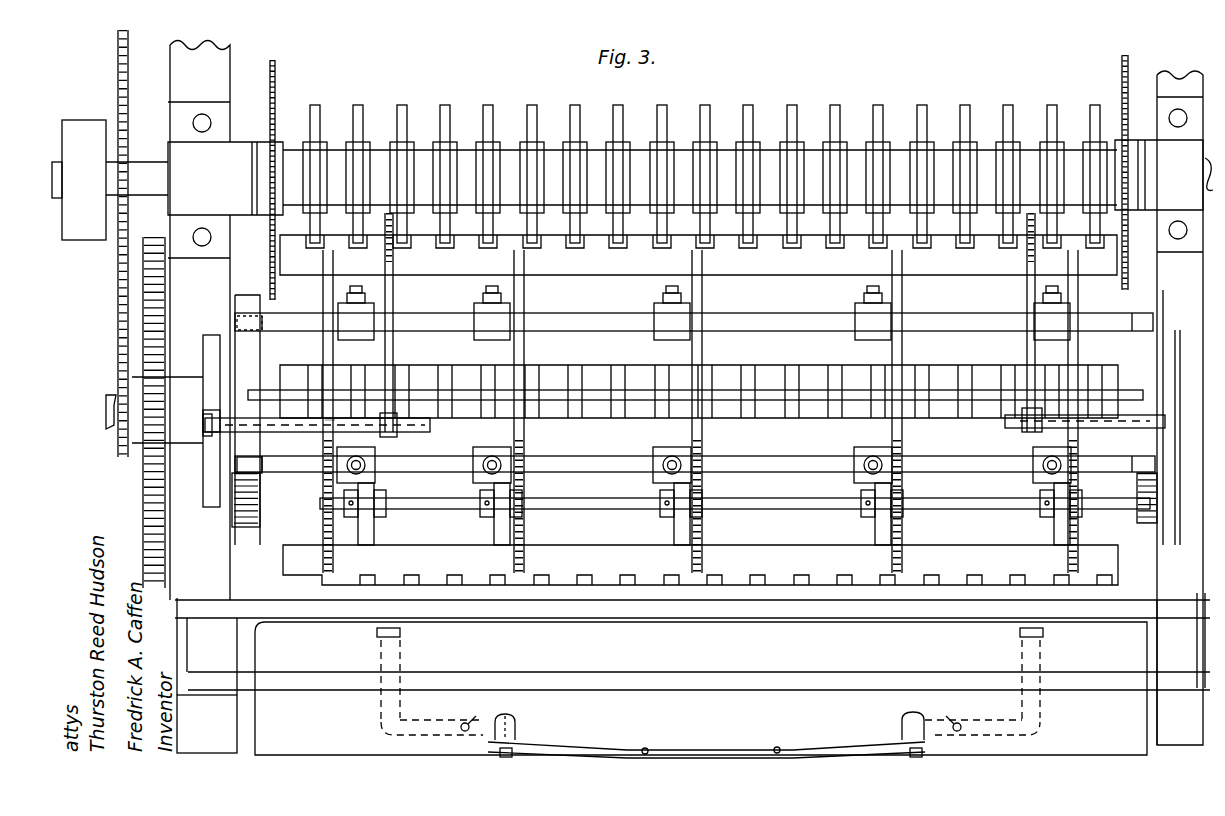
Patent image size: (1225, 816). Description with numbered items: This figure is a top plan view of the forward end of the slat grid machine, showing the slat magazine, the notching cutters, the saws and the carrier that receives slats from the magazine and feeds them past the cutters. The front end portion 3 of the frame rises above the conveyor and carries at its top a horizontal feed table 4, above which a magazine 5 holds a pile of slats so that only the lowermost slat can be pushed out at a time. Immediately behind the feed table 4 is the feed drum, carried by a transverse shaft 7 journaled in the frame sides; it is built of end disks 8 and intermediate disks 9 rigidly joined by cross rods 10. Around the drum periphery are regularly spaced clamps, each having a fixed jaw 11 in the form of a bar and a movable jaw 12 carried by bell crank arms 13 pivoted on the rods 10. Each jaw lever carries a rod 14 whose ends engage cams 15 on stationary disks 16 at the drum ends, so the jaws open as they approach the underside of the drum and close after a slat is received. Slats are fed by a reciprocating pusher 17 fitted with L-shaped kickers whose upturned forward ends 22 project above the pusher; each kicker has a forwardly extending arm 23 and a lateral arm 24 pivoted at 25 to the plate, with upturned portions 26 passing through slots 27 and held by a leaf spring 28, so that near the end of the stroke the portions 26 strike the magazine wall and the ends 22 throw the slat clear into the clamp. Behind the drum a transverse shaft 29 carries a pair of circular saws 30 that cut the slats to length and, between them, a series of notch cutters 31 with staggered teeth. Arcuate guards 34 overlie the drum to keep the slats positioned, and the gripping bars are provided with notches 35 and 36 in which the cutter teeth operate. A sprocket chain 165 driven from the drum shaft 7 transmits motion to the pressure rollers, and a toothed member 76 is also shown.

The front end portion of the frame 3 is at (690, 393).
The feed table 4 is at (246, 600).
The magazine 5 is at (217, 656).
The transverse shaft 7 is at (110, 430).
The end disks 8 is at (325, 490).
The intermediate disks 9 is at (516, 496).
The cross rods 10 is at (1008, 519).
The fixed jaw 11 is at (545, 372).
The movable jaw 12 is at (817, 428).
The bell crank arms 13 is at (338, 292).
The rod 14 is at (300, 318).
The cams 15 is at (256, 498).
The stationary disks 16 is at (697, 435).
The pusher 17 is at (706, 677).
The upturned forward ends 22 is at (400, 634).
The forwardly extending arm 23 is at (400, 665).
The arms 24 is at (436, 724).
The pivot 25 is at (711, 709).
The upturned portions 26 is at (514, 714).
The slots 27 is at (498, 750).
The leaf spring 28 is at (576, 744).
The transverse shaft 29 is at (147, 154).
The circular saws 30 is at (275, 92).
The notch cutters 31 is at (572, 120).
The arcuate guards 34 is at (393, 298).
The notches 35 is at (410, 372).
The notches 36 is at (596, 245).
The gear 76 is at (235, 512).
The sprocket chain 165 is at (118, 316).